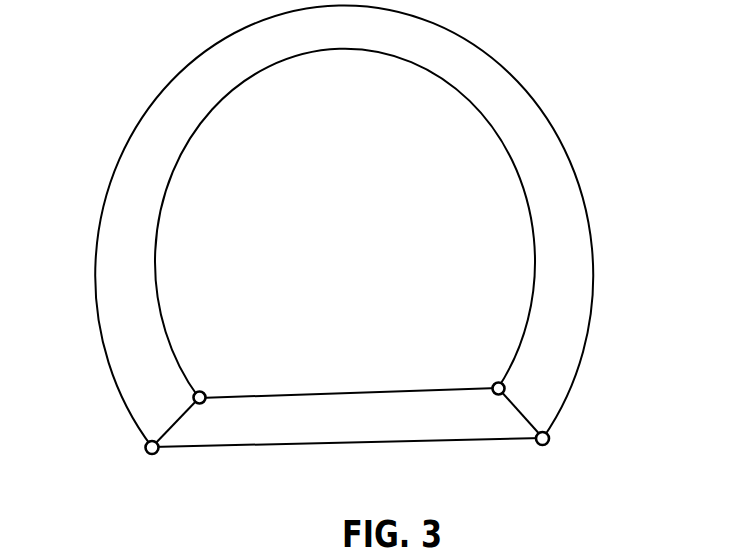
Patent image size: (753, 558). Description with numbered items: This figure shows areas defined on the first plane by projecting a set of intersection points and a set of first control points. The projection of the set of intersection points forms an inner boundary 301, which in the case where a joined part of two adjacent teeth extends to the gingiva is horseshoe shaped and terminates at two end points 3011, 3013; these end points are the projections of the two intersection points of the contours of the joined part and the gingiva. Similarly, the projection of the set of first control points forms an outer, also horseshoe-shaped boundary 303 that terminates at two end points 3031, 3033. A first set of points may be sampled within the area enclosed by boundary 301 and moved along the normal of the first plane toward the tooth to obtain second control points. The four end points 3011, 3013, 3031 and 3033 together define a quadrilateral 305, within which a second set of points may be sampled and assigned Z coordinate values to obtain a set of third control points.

The boundary 301 is at (513, 168).
The boundary 303 is at (122, 147).
The quadrilateral 305 is at (423, 415).
The end point 3011 is at (205, 388).
The end point 3013 is at (492, 380).
The end point 3031 is at (149, 457).
The end point 3033 is at (548, 444).